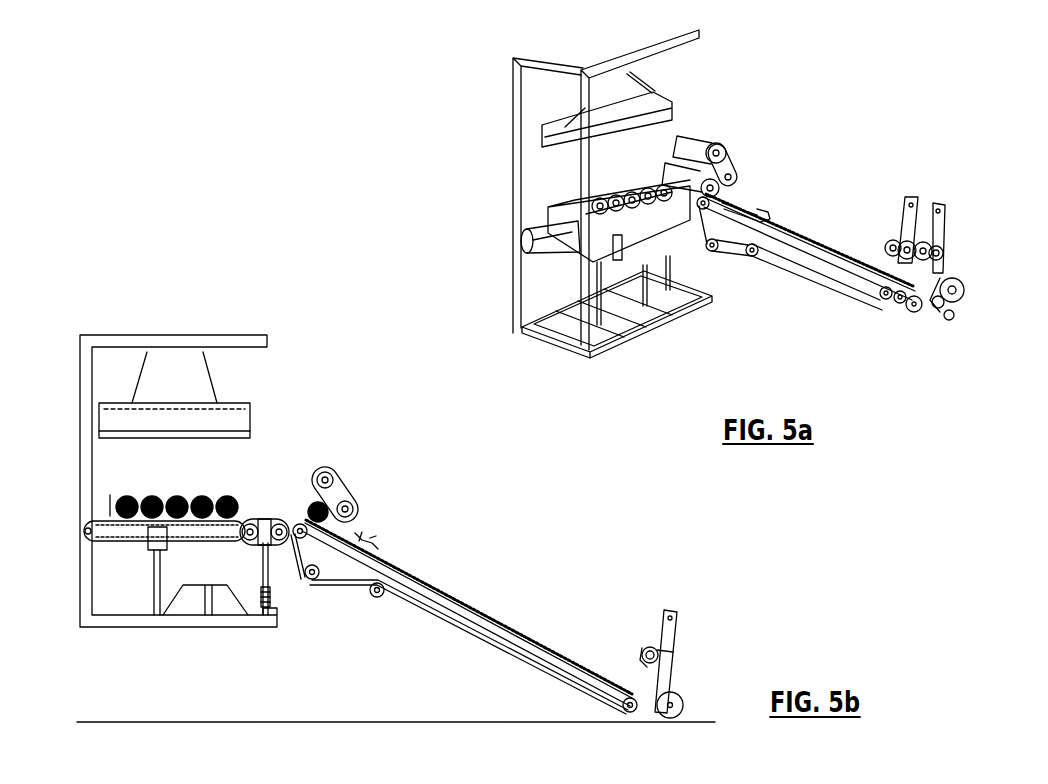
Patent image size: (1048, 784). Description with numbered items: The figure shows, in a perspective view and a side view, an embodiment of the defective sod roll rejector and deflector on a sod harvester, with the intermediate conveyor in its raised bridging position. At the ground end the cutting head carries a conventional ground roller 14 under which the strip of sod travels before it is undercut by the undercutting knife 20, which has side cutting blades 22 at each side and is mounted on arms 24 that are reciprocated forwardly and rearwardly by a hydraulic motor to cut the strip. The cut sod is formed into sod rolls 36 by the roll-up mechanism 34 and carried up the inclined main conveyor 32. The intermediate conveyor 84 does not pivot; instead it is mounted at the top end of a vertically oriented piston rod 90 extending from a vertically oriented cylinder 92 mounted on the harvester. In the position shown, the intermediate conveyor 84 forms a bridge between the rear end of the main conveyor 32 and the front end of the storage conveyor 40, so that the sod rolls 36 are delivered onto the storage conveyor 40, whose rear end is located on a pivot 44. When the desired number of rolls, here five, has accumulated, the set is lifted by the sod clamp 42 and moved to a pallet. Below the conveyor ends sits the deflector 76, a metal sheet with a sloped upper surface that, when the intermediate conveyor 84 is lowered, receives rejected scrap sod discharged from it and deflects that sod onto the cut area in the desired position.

In FIG. 5A, the ground roller 14 is at (950, 282).
In FIG. 5B, the ground roller 14 is at (678, 697).
In FIG. 5A, the undercutting knife 20 is at (936, 306).
In FIG. 5A, the side cutting blades 22 is at (950, 322).
In FIG. 5A, the arms 24 is at (903, 200).
In FIG. 5B, the arms 24 is at (665, 634).
In FIG. 5A, the main conveyor 32 is at (822, 238).
In FIG. 5B, the main conveyor 32 is at (505, 627).
In FIG. 5A, the roll-up mechanism 34 is at (733, 155).
In FIG. 5B, the roll-up mechanism 34 is at (353, 489).
In FIG. 5A, the sod rolls 36 is at (675, 177).
In FIG. 5A, the storage conveyor 40 is at (525, 235).
In FIG. 5B, the storage conveyor 40 is at (103, 520).
In FIG. 5A, the sod clamp 42 is at (676, 106).
In FIG. 5B, the sod clamp 42 is at (243, 419).
In FIG. 5B, the pivot 44 is at (98, 546).
In FIG. 5A, the deflector 76 is at (650, 283).
In FIG. 5B, the deflector 76 is at (227, 604).
In FIG. 5B, the intermediate conveyor 84 is at (267, 519).
In FIG. 5B, the piston rod 90 is at (268, 570).
In FIG. 5B, the cylinder 92 is at (270, 602).